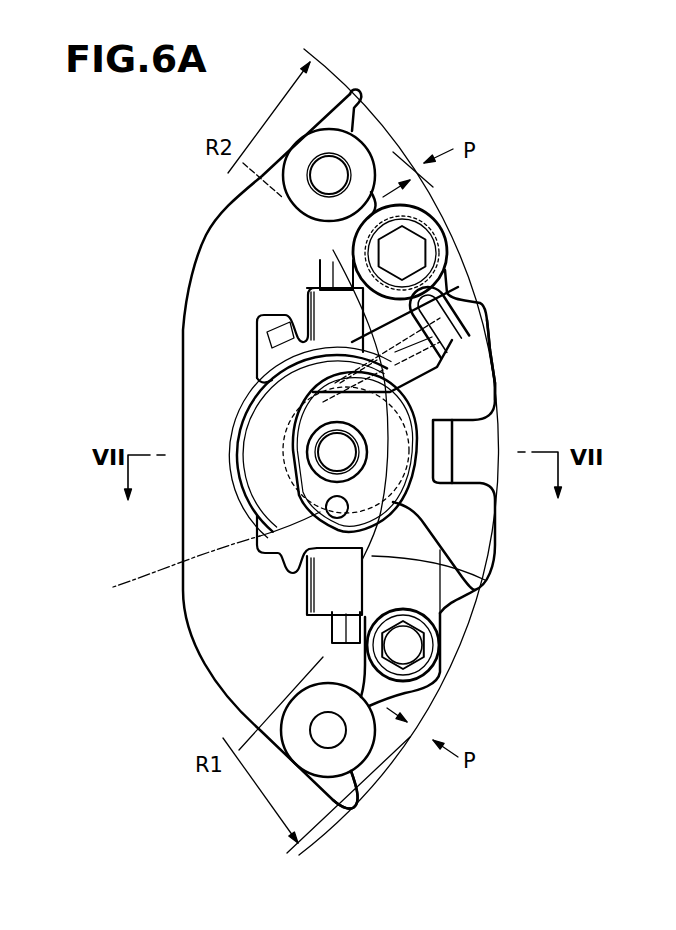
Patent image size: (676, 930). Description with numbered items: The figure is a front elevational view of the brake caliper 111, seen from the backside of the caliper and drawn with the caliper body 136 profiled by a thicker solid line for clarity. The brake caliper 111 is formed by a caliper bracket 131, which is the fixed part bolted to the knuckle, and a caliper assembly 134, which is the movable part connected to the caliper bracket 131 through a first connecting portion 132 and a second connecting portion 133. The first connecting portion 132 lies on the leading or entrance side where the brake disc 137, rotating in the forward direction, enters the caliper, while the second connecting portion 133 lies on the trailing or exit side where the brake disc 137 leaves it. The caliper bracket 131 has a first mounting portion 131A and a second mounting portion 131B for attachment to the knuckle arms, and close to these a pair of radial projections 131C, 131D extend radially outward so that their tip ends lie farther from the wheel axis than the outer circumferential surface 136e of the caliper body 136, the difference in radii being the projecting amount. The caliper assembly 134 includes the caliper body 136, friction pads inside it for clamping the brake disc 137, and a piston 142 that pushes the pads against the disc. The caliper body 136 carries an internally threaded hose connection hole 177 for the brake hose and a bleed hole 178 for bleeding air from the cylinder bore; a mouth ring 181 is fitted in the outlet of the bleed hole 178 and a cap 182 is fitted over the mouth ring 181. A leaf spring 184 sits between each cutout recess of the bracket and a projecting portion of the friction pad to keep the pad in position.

The brake caliper 111 is at (152, 210).
The caliper bracket 131 is at (203, 375).
The first mounting portion 131A is at (357, 143).
The second mounting portion 131B is at (362, 747).
The radial projection 131C is at (353, 92).
The radial projection 131D is at (353, 812).
The first connecting portion 132 is at (441, 229).
The second connecting portion 133 is at (424, 672).
The caliper assembly 134 is at (500, 370).
The caliper body 136 is at (467, 528).
The outer circumferential surface 136e is at (500, 383).
The brake disc 137 is at (485, 580).
The piston 142 is at (194, 557).
The hose connection hole 177 is at (333, 458).
The bleed hole 178 is at (448, 297).
The mouth ring 181 is at (480, 348).
The cap 182 is at (463, 308).
The leaf spring 184 is at (298, 328).